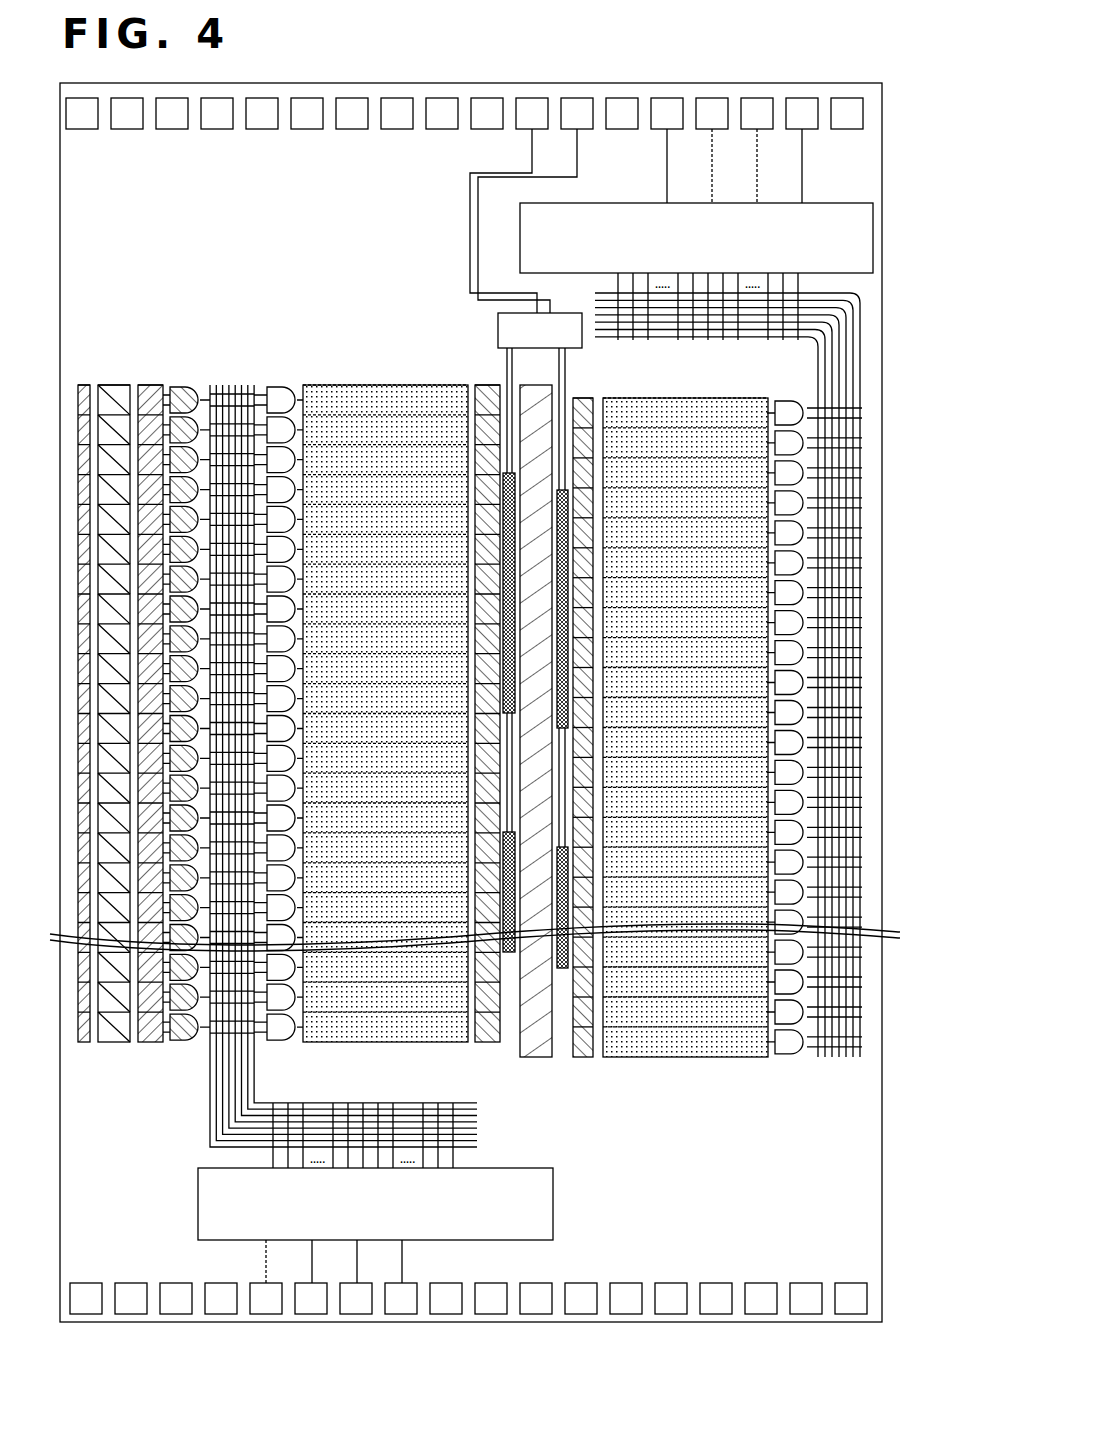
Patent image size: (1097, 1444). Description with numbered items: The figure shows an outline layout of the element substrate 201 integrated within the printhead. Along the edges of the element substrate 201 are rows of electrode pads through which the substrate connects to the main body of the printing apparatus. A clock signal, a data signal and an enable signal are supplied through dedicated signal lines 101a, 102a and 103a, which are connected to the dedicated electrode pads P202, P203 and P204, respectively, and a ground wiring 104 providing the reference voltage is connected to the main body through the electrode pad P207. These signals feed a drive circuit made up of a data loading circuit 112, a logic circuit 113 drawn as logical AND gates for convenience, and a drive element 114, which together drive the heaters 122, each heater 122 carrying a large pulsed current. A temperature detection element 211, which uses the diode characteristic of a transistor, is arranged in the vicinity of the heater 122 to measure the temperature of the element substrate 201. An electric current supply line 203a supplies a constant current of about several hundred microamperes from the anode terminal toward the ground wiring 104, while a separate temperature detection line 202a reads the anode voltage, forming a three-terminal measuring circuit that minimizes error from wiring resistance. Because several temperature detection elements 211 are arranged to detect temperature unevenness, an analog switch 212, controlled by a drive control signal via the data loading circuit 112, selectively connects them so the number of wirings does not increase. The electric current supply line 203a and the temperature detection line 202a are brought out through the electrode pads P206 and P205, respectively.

The element substrate 201 is at (353, 83).
The electrode pad P202 is at (667, 98).
The electrode pad P203 is at (712, 98).
The electrode pad P204 is at (757, 98).
The electrode pad (fourth pad) P205 is at (533, 98).
The electrode pad (third pad) P206 is at (577, 98).
The electrode pad P207 is at (802, 98).
The dedicated signal line 101a is at (667, 190).
The dedicated signal line 102a is at (712, 177).
The dedicated signal line 103a is at (757, 160).
The ground wiring 104 is at (802, 142).
The data loading circuit 112 is at (860, 265).
The logic circuit 113 is at (184, 385).
The drive element 114 is at (333, 385).
The heater 122 is at (481, 385).
The temperature detection line 202a is at (532, 160).
The electric current supply line 203a is at (577, 150).
The temperature detection element 211 is at (563, 970).
The analog switch 212 is at (498, 330).